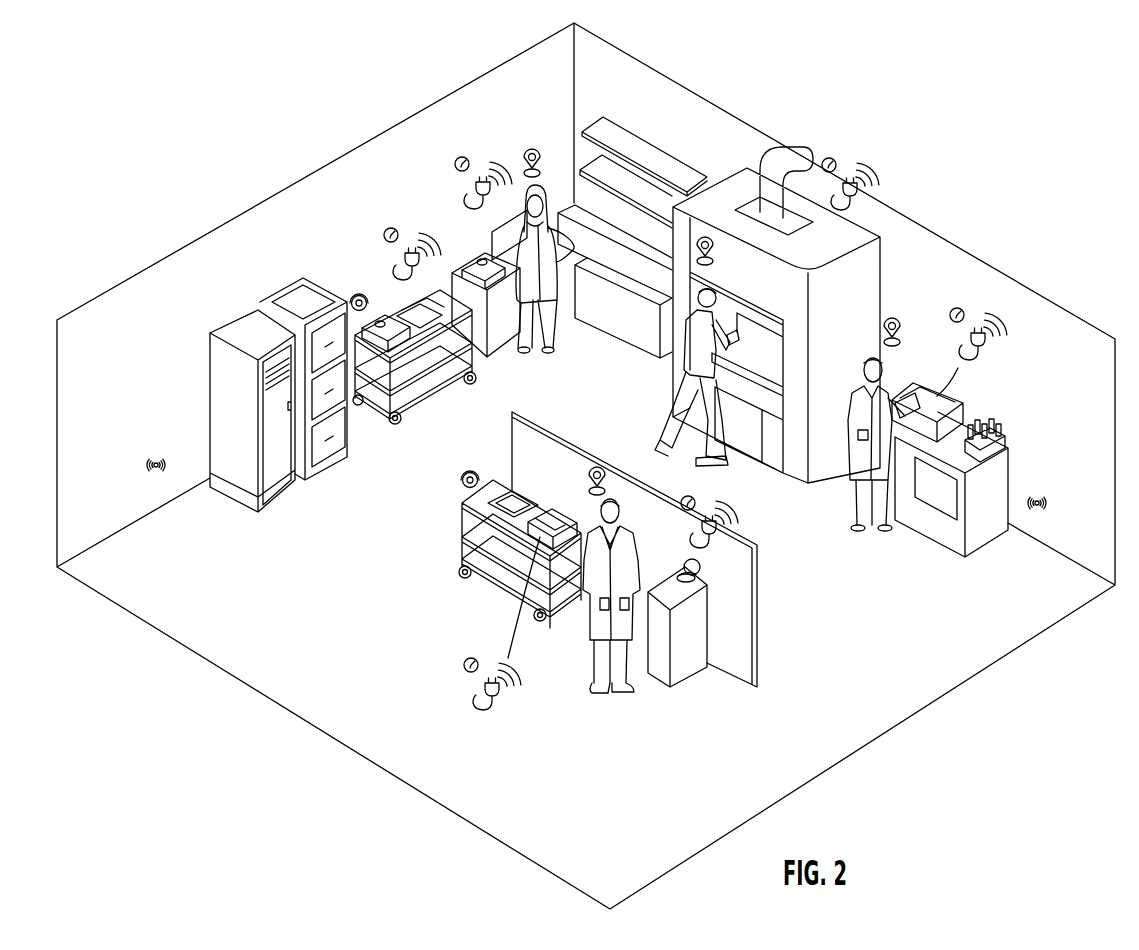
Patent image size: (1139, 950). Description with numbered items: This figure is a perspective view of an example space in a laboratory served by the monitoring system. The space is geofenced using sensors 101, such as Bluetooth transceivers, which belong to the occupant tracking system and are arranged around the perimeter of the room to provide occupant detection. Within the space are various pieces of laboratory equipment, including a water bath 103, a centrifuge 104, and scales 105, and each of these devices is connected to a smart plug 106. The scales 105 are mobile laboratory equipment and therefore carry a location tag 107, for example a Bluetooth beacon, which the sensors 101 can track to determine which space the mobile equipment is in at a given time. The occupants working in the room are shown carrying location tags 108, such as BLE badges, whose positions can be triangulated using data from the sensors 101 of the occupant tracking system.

The sensors 101 is at (158, 455).
The water bath 103 is at (947, 406).
The centrifuge 104 is at (710, 598).
The scales 105 is at (466, 258).
The smart plugs 106 is at (490, 162).
The location tag 107 is at (351, 297).
The location tags 108 is at (534, 148).